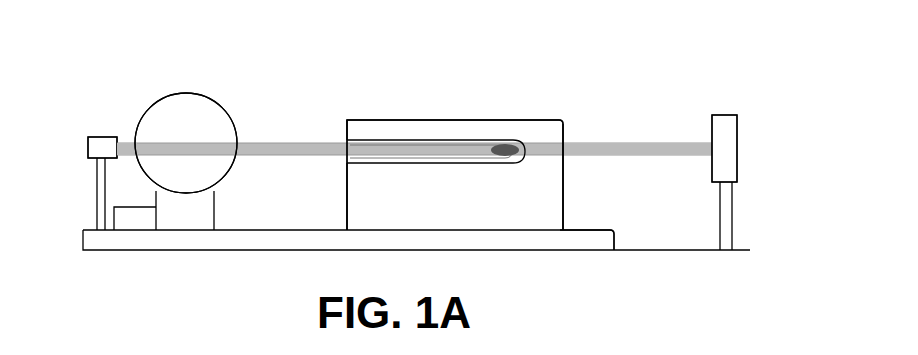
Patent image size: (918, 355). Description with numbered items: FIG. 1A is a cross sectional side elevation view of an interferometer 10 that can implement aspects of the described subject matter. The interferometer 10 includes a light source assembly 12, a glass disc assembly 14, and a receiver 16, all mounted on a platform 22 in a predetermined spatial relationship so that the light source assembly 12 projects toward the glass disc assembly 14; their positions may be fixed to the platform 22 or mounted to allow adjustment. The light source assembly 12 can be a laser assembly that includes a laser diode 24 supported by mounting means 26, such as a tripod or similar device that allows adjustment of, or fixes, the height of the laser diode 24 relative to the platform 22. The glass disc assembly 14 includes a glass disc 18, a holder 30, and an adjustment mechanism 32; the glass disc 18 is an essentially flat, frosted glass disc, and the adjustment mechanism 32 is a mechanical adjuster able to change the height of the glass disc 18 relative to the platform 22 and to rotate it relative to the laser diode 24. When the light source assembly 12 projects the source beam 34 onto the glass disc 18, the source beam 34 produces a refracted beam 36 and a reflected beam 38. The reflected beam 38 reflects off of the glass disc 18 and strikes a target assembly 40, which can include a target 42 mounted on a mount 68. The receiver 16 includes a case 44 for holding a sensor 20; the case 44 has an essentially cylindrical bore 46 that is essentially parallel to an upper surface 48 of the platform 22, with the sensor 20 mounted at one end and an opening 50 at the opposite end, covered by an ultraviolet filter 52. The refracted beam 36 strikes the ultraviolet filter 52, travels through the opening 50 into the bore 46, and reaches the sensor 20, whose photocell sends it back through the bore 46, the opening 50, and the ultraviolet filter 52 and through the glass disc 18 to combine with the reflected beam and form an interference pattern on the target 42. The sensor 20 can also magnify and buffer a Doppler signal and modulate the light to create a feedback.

The interferometer 10 is at (382, 80).
The light source assembly 12 is at (100, 128).
The glass disc assembly 14 is at (158, 86).
The receiver 16 is at (497, 100).
The glass disc 18 is at (207, 97).
The sensor 20 is at (500, 143).
The platform 22 is at (180, 250).
The laser diode 24 is at (88, 147).
The mounting means 26 is at (93, 203).
The holder 30 is at (213, 192).
The adjustment mechanism 32 is at (140, 207).
The source beam 34 is at (128, 147).
The refracted beam 36 is at (285, 150).
The reflected beam 38 is at (643, 148).
The target assembly 40 is at (728, 102).
The target 42 is at (730, 147).
The case 44 is at (562, 127).
The bore 46 is at (410, 140).
The upper surface 48 is at (587, 230).
The opening 50 is at (347, 133).
The ultraviolet filter 52 is at (343, 165).
The mount 68 is at (732, 207).